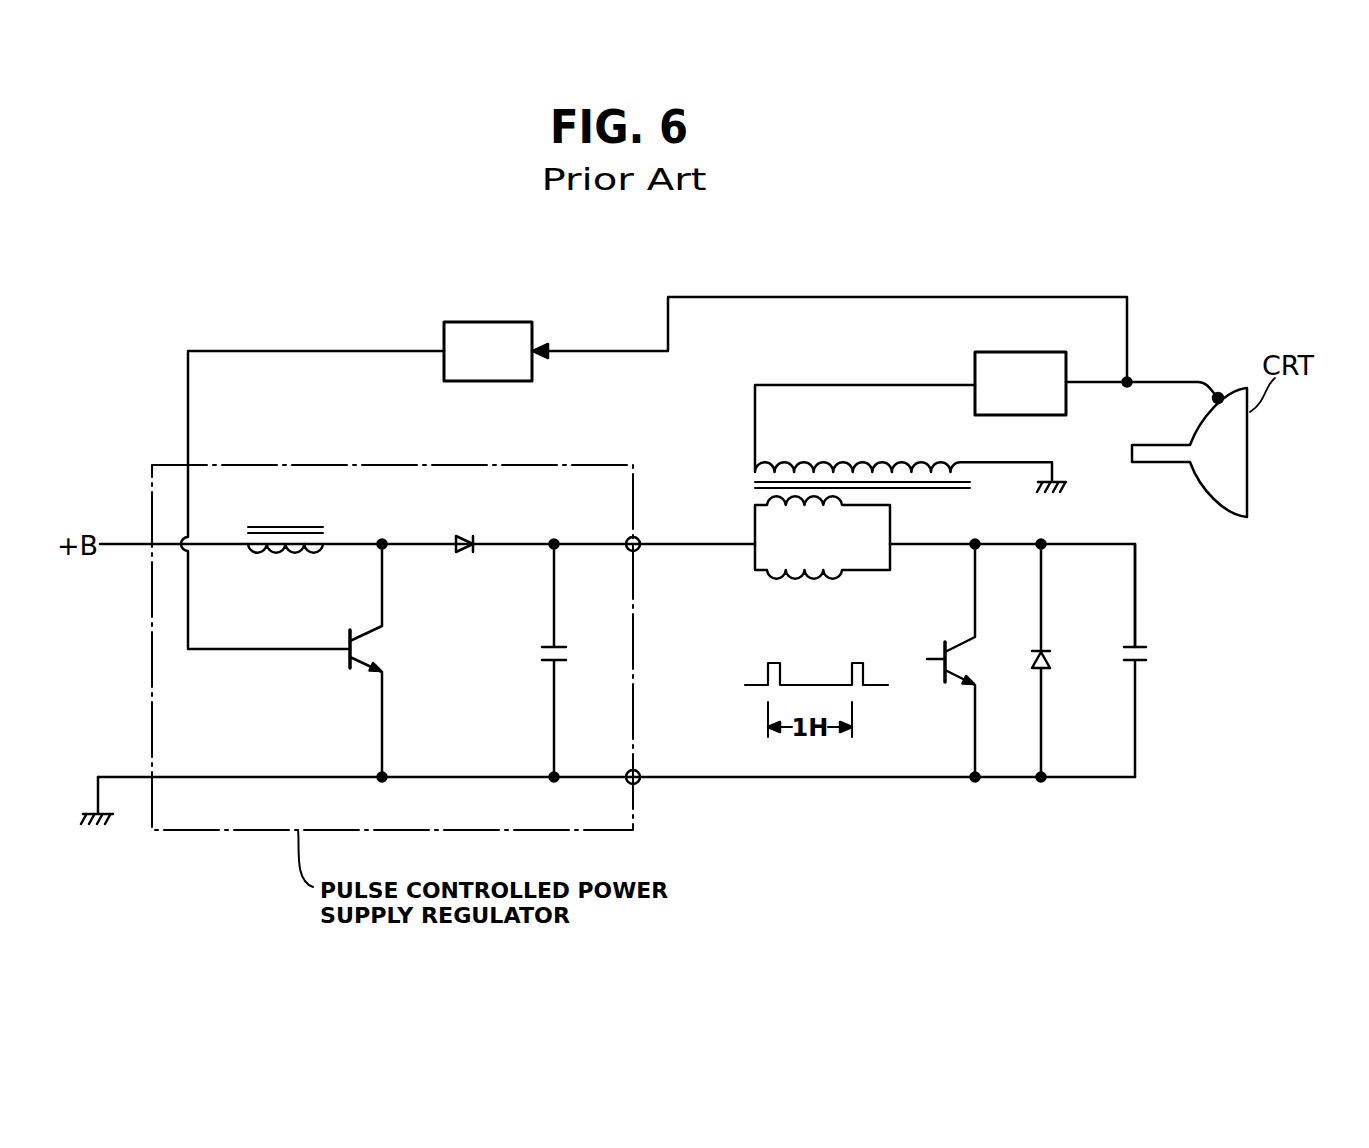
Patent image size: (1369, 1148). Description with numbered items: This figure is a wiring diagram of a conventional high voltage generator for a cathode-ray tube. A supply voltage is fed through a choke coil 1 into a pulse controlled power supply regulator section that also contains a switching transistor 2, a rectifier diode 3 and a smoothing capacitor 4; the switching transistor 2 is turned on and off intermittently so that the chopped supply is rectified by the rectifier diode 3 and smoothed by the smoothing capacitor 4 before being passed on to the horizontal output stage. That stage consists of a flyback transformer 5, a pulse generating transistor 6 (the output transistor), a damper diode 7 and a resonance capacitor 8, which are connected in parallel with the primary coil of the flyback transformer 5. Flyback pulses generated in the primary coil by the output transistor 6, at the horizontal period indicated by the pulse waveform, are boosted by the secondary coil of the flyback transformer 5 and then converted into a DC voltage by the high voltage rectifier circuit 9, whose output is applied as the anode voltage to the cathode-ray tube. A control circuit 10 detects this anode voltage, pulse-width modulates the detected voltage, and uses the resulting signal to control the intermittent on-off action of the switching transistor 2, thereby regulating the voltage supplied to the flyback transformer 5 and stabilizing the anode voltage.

The choke coil 1 is at (333, 533).
The switching transistor 2 is at (373, 647).
The rectifier diode 3 is at (470, 535).
The smoothing capacitor 4 is at (541, 657).
The flyback transformer 5 is at (752, 482).
The pulse generating transistor 6 is at (946, 653).
The damper diode 7 is at (1050, 657).
The resonance capacitor 8 is at (1146, 654).
The high voltage rectifier circuit 9 is at (993, 352).
The control circuit 10 is at (505, 321).